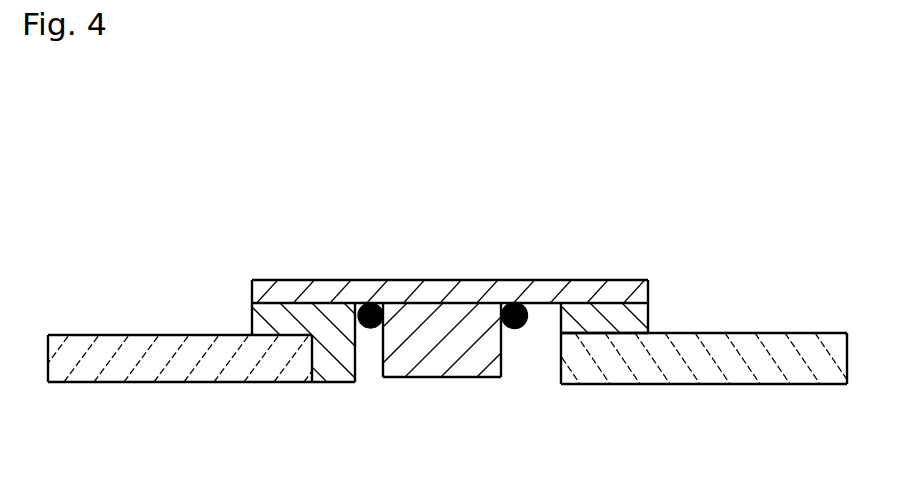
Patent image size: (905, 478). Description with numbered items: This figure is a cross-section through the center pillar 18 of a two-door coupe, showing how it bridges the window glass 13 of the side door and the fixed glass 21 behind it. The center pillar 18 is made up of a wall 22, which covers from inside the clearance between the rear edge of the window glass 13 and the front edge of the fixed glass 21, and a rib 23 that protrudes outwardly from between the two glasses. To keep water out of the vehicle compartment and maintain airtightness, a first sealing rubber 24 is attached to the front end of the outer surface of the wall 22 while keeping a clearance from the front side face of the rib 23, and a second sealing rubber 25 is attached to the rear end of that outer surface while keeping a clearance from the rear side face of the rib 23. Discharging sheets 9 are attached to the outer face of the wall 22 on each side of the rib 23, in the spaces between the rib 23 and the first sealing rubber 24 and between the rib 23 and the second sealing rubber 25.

The discharging sheet 9 is at (370, 328).
The window glass 13 is at (145, 367).
The center pillar 18 is at (373, 291).
The fixed glass 21 is at (683, 377).
The wall 22 is at (450, 264).
The rib 23 is at (433, 365).
The first sealing rubber 24 is at (337, 370).
The second sealing rubber 25 is at (637, 323).